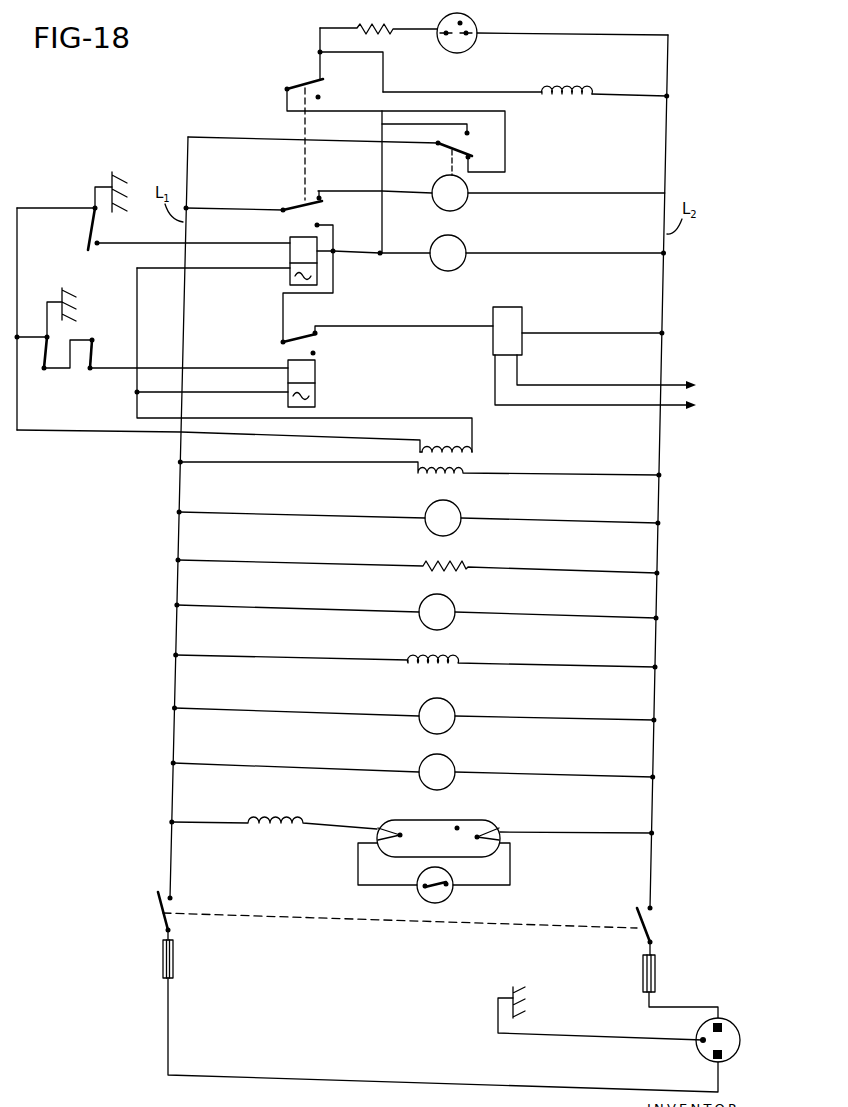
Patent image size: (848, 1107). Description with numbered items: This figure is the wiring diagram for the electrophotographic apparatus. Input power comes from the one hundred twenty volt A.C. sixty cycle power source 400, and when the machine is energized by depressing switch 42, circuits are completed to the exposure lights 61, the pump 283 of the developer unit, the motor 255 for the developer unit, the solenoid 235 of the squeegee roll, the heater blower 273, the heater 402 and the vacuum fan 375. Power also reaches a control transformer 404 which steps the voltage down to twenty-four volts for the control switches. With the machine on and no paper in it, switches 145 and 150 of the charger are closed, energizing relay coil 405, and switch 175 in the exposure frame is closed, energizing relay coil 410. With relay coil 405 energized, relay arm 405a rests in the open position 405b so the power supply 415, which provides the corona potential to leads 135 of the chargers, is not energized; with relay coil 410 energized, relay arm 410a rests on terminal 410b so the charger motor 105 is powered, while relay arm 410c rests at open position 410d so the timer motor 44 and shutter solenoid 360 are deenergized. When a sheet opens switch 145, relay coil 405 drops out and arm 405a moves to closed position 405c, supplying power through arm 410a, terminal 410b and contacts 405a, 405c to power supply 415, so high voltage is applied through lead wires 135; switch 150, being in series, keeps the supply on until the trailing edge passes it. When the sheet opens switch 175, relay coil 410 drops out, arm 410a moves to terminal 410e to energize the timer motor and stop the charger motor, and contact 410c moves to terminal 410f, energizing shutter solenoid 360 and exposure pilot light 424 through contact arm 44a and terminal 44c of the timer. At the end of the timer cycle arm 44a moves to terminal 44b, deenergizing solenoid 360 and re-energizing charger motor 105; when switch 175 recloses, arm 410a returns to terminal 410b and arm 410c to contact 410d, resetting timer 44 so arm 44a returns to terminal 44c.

The exposure pilot light 424 is at (455, 48).
The terminal 410f is at (316, 74).
The relay arm 410c is at (287, 86).
The terminal 410d is at (342, 90).
The terminal 410e is at (318, 194).
The relay arm 410a is at (293, 207).
The terminal 410b is at (319, 223).
The relay coil 410 is at (290, 240).
The shutter solenoid 360 is at (562, 102).
The contact arm 44a is at (440, 148).
The terminal 44b is at (470, 134).
The terminal 44c is at (470, 160).
The timer motor 44 is at (458, 208).
The charger motor 105 is at (458, 268).
The switch 175 is at (88, 228).
The switch 145 is at (44, 356).
The switch 150 is at (93, 355).
The relay arm 405a is at (294, 339).
The open position 405b is at (316, 354).
The closed position 405c is at (314, 328).
The relay coil 405 is at (315, 386).
The power supply 415 is at (513, 337).
The leads 135 is at (577, 408).
The control transformer 404 is at (452, 476).
The vacuum fan 375 is at (457, 530).
The heater 402 is at (455, 572).
The heater blower 273 is at (451, 625).
The solenoid of the squeegee roll 235 is at (462, 664).
The motor for the developer unit 255 is at (452, 730).
The pump of the developer unit 283 is at (452, 786).
The exposure lights 61 is at (423, 822).
The switch 42 is at (162, 908).
The power source 400 is at (700, 1050).